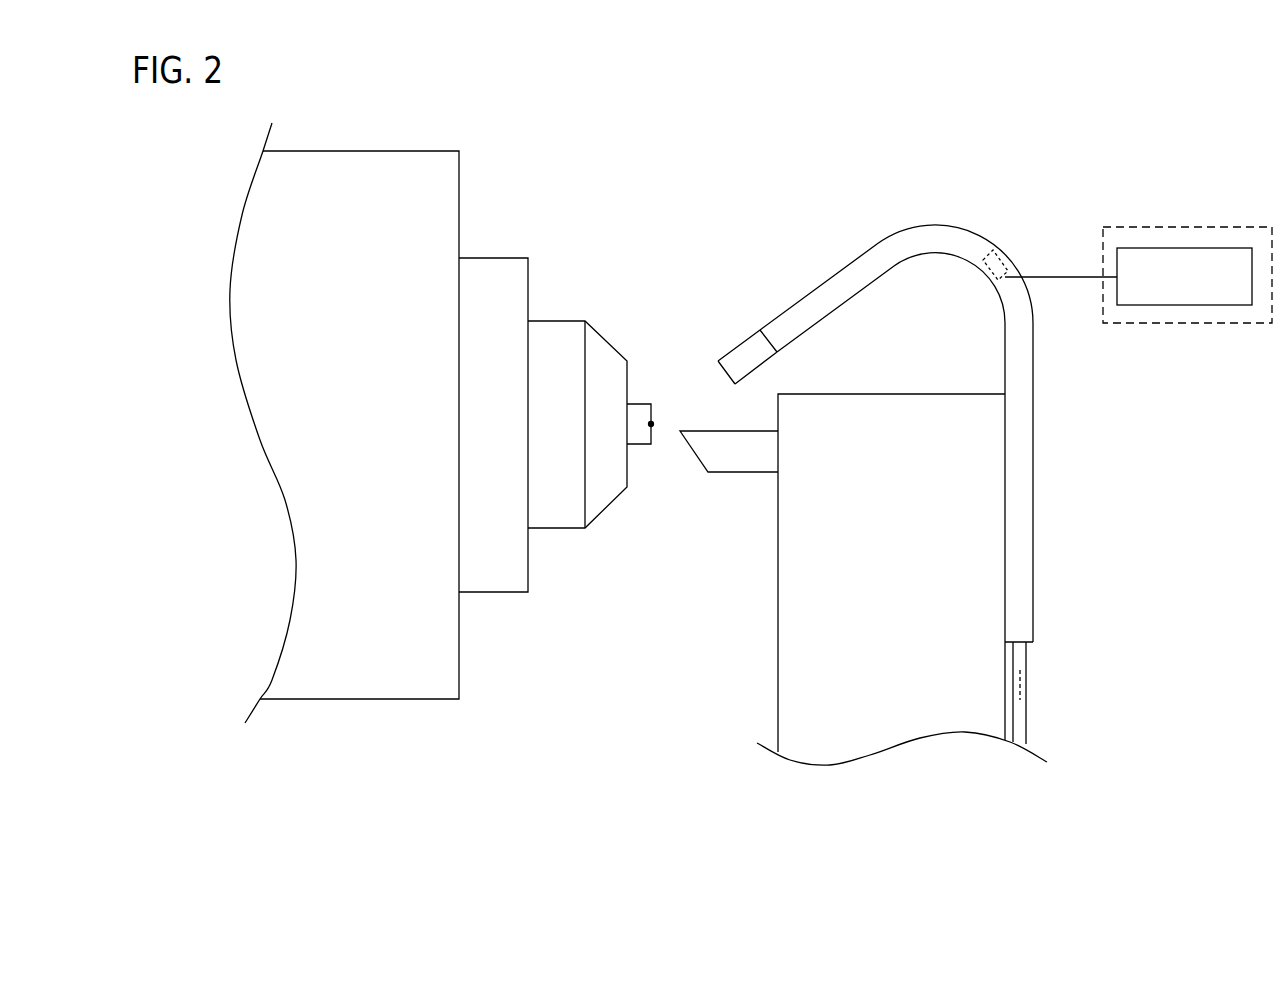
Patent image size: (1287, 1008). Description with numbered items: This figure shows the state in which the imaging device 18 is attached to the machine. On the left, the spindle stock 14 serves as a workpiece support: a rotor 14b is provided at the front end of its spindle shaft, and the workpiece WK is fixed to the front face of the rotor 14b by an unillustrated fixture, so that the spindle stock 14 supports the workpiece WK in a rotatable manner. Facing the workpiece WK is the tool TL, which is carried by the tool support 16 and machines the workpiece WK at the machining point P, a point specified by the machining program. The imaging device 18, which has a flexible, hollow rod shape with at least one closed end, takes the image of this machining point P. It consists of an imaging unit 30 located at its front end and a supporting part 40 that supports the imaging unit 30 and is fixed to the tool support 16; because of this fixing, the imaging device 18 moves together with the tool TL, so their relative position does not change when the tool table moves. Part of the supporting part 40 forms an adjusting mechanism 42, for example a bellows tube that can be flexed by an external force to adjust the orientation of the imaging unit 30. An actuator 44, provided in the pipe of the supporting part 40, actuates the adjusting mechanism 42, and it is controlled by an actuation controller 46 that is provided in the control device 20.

The spindle stock 14 is at (349, 148).
The rotor 14b is at (555, 338).
The workpiece WK is at (641, 444).
The machining point P is at (651, 424).
The tool TL is at (725, 476).
The tool support 16 is at (790, 688).
The imaging device 18 is at (889, 391).
The imaging unit 30 is at (750, 353).
The supporting part 40 is at (910, 410).
The adjusting mechanism 42 is at (1003, 226).
The actuator 44 is at (985, 275).
The actuation controller 46 is at (1155, 248).
The control device 20 is at (1187, 288).